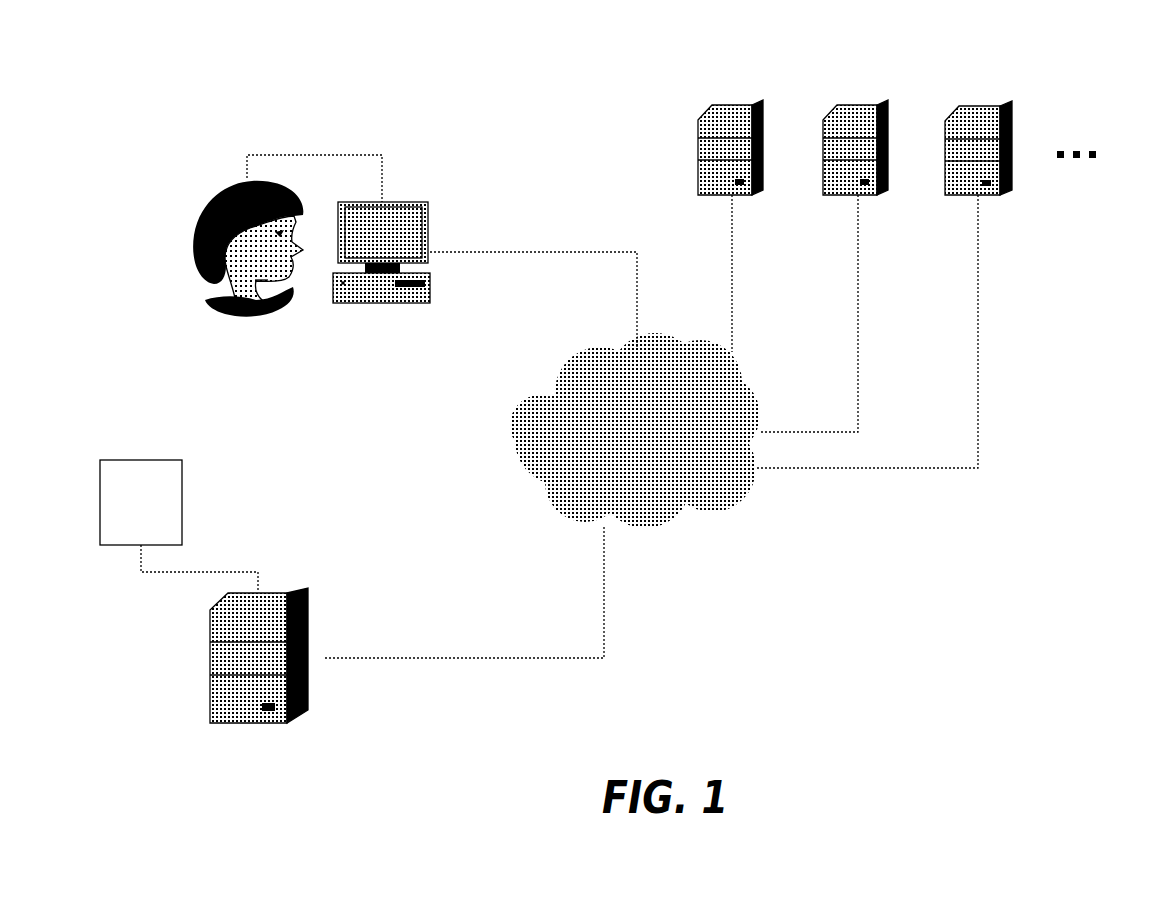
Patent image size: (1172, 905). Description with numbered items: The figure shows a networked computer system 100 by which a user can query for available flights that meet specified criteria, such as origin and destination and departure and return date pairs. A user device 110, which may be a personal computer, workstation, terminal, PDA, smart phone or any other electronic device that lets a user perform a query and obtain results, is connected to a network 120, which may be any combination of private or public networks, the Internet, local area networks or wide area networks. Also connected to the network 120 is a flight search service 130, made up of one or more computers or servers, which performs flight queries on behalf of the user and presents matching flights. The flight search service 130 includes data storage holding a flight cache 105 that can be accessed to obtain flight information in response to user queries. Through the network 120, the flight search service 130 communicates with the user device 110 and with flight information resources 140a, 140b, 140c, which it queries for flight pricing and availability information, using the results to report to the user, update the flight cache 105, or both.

The computer system 100 is at (463, 126).
The flight cache 105 is at (179, 526).
The user device 110 is at (472, 275).
The network 120 is at (635, 430).
The flight search service 130 is at (372, 642).
The flight information resource 140a is at (750, 104).
The flight information resource 140b is at (845, 104).
The flight information resource 140c is at (1003, 104).